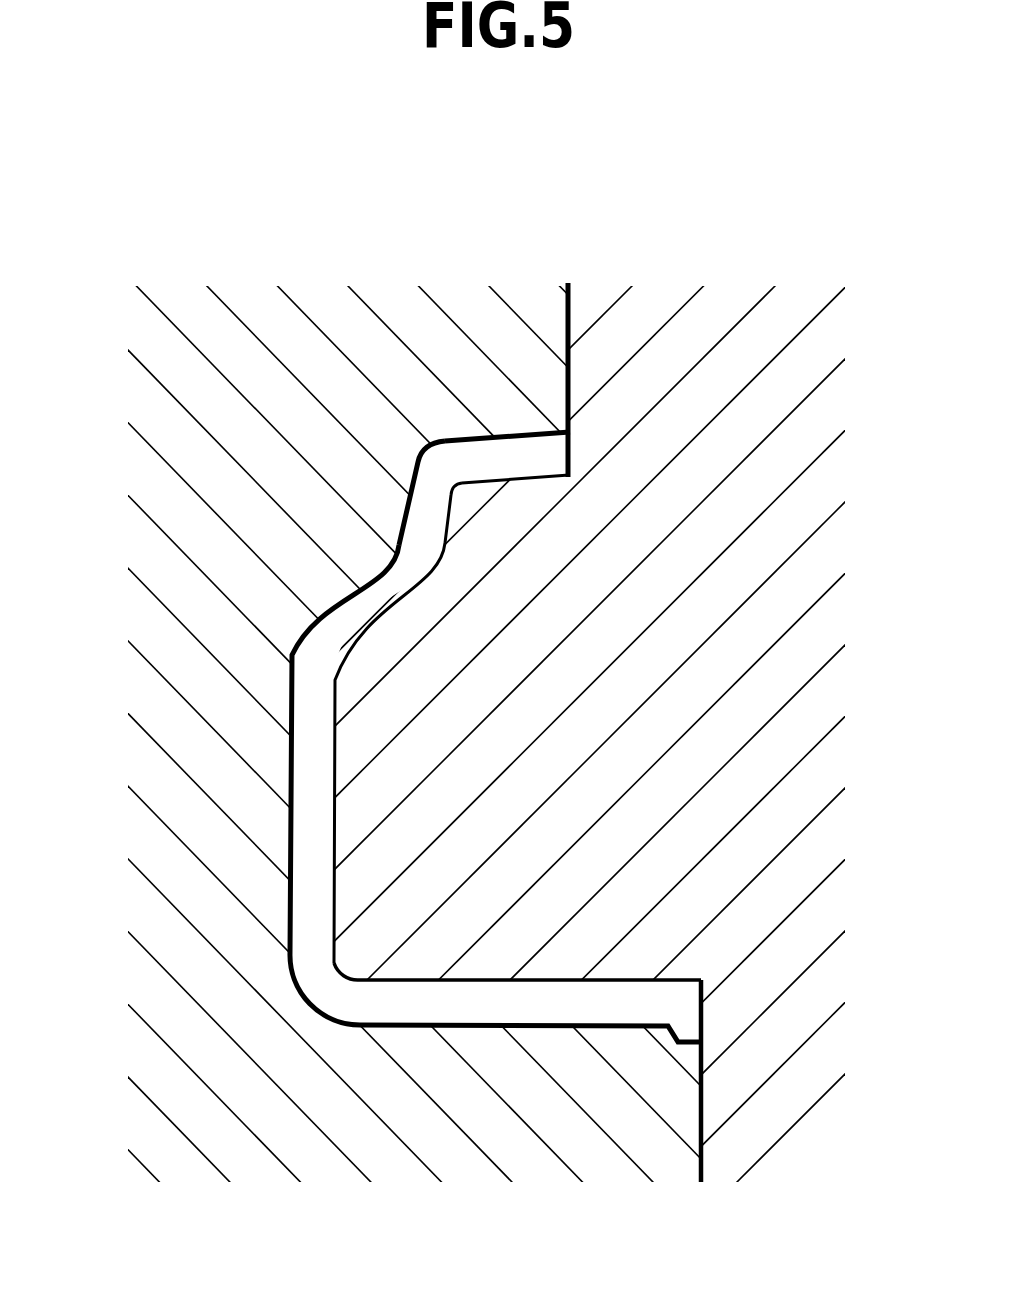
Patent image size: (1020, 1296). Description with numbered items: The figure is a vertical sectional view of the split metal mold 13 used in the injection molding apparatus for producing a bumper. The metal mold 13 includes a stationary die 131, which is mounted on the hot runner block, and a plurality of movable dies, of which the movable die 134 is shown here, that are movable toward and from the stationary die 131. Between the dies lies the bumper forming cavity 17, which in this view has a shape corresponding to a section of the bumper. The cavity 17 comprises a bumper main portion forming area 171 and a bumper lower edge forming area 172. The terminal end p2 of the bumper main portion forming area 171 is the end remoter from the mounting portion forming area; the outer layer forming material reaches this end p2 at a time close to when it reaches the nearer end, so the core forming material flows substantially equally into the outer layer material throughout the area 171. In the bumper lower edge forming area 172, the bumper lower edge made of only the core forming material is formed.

The split metal mold 13 is at (510, 690).
The stationary die 131 is at (807, 642).
The movable die 134 is at (173, 663).
The bumper forming cavity 17 is at (495, 689).
The bumper main portion forming area 171 is at (322, 813).
The bumper lower edge forming area 172 is at (522, 445).
The terminal end of the bumper main portion forming area p2 is at (437, 472).